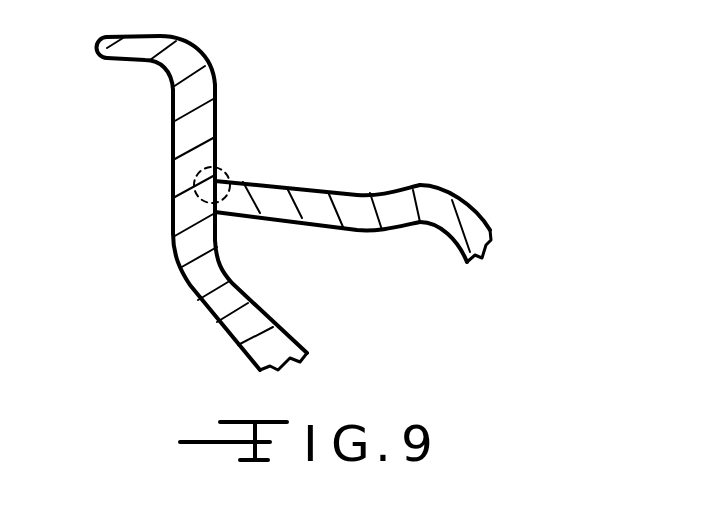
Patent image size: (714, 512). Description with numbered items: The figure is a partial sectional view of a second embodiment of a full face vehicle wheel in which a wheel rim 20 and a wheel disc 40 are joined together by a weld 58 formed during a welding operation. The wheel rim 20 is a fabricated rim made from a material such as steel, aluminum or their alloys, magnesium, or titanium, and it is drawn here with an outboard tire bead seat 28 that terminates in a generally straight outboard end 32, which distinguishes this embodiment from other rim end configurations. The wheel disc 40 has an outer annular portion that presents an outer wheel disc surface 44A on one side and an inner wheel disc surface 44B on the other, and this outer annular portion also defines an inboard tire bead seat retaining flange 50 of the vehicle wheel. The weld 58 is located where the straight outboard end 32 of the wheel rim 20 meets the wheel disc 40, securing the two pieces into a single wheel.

The wheel rim 20 is at (475, 200).
The outboard tire bead seat 28 is at (305, 190).
The straight outboard end 32 is at (243, 219).
The wheel disc 40 is at (194, 310).
The outer wheel disc surface 44A is at (173, 152).
The inner wheel disc surface 44B is at (217, 107).
The inboard tire bead seat retaining flange 50 is at (218, 63).
The weld 58 is at (227, 170).